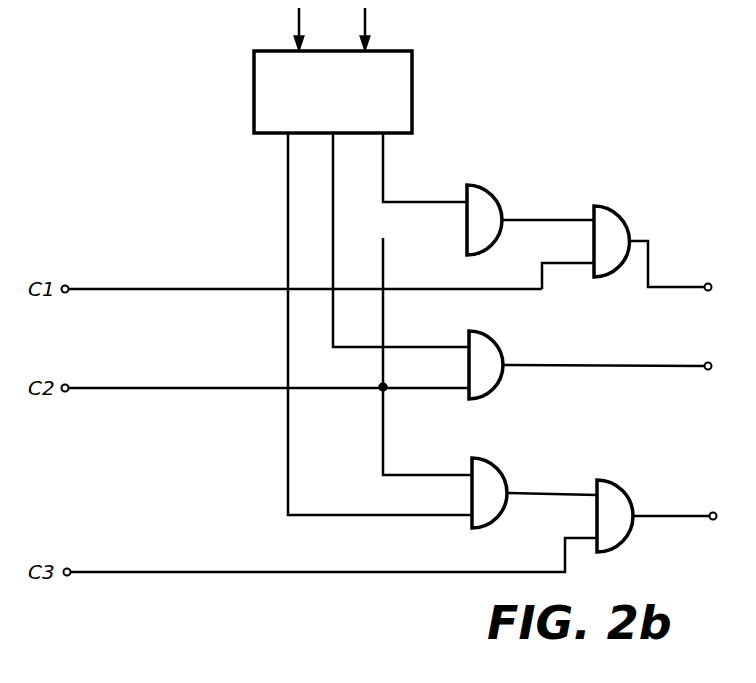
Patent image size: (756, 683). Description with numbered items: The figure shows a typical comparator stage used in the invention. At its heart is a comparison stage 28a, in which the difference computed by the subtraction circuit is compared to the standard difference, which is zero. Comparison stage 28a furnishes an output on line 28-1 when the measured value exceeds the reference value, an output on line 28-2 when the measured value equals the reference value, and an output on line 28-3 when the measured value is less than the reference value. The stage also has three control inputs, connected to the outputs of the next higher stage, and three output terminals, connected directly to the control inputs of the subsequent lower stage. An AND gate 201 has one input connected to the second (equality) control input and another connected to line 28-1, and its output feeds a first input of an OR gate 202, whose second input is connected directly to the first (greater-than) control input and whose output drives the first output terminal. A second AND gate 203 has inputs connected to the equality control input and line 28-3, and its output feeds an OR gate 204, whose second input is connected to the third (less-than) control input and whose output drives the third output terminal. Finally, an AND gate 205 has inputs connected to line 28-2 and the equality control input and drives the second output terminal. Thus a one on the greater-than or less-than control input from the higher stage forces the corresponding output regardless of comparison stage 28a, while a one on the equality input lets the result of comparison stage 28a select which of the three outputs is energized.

The comparison stage 28a is at (412, 89).
The line 28-1 is at (383, 177).
The line 28-2 is at (333, 247).
The line 28-3 is at (288, 228).
The AND gate 201 is at (495, 202).
The OR gate 202 is at (623, 228).
The second AND gate 203 is at (500, 473).
The OR gate 204 is at (627, 503).
The AND gate 205 is at (498, 351).